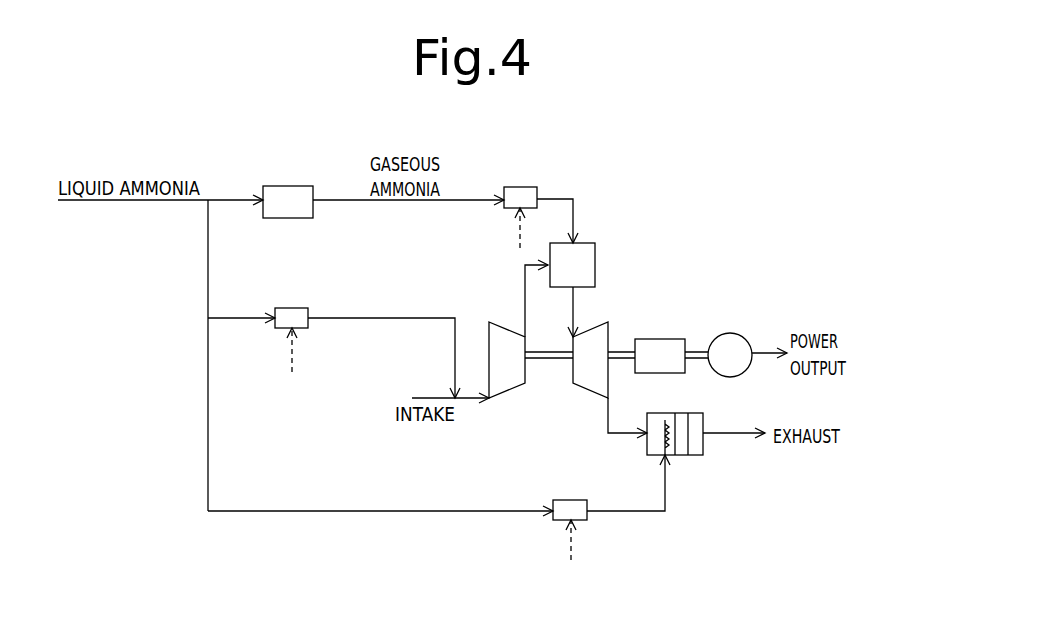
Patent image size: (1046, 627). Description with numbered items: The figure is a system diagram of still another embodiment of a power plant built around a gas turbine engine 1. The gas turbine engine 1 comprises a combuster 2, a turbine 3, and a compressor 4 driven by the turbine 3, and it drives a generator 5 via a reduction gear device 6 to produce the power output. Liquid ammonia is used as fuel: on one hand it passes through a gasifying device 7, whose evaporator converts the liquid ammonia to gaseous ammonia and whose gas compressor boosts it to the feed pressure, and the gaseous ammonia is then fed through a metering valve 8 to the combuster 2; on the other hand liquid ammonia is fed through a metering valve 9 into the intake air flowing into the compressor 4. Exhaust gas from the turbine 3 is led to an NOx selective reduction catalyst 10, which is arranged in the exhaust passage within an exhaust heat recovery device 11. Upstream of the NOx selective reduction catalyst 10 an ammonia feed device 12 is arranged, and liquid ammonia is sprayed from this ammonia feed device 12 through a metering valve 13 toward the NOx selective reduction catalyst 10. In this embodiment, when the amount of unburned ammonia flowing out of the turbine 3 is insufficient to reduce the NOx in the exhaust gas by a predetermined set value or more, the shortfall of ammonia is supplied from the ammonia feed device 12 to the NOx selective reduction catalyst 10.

The gas turbine engine 1 is at (612, 300).
The combuster 2 is at (591, 247).
The turbine 3 is at (590, 382).
The compressor 4 is at (508, 382).
The generator 5 is at (732, 341).
The reduction gear device 6 is at (662, 342).
The gasifying device 7 is at (283, 197).
The fuel metering valve 8 is at (520, 193).
The fuel metering valve 9 is at (293, 311).
The NOx selective reduction catalyst 10 is at (680, 452).
The exhaust heat recovery device 11 is at (707, 412).
The ammonia feed device 12 is at (664, 438).
The metering valve 13 is at (565, 503).